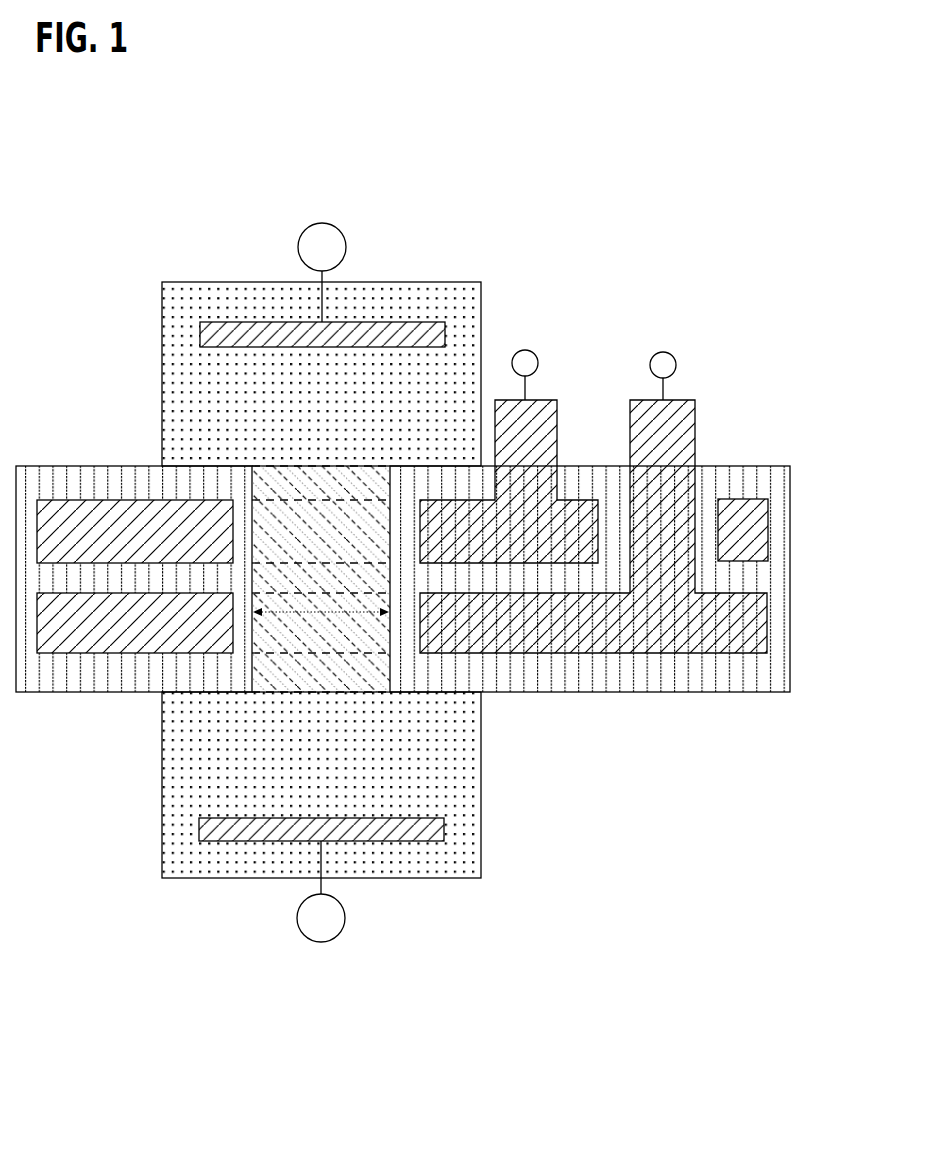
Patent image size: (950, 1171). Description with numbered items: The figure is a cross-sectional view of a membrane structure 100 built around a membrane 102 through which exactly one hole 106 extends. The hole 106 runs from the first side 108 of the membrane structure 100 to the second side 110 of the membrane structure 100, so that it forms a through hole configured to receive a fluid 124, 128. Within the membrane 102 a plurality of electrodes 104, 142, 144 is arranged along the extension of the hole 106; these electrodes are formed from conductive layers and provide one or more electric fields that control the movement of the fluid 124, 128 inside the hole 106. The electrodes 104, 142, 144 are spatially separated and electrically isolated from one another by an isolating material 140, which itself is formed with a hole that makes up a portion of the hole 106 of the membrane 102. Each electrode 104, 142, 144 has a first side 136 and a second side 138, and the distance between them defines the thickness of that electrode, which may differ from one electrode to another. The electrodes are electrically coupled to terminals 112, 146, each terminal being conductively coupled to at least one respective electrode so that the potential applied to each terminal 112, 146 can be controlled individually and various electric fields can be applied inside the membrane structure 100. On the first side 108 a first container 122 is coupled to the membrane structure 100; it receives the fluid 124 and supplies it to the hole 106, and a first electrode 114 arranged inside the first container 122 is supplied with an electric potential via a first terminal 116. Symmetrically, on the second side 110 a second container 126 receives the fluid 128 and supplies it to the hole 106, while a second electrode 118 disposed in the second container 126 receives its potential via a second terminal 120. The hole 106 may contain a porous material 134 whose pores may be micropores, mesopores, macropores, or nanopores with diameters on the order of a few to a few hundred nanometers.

The membrane structure 100 is at (737, 200).
The membrane 102 is at (745, 697).
The electrode 104 is at (113, 528).
The hole 106 is at (322, 617).
The first side of the membrane structure 108 is at (148, 462).
The second side of the membrane structure 110 is at (490, 695).
The terminal 112 is at (528, 352).
The first electrode 114 is at (290, 335).
The first terminal 116 is at (317, 252).
The second electrode 118 is at (352, 835).
The second terminal 120 is at (317, 913).
The first container 122 is at (181, 282).
The fluid 124 is at (392, 310).
The second container 126 is at (182, 880).
The fluid 128 is at (390, 848).
The porous material 134 is at (298, 500).
The first side of electrode 136 is at (178, 593).
The second side of electrode 138 is at (162, 655).
The isolating material 140 is at (570, 660).
The electrode 142 is at (110, 640).
The electrode 144 is at (740, 500).
The terminal 146 is at (665, 353).